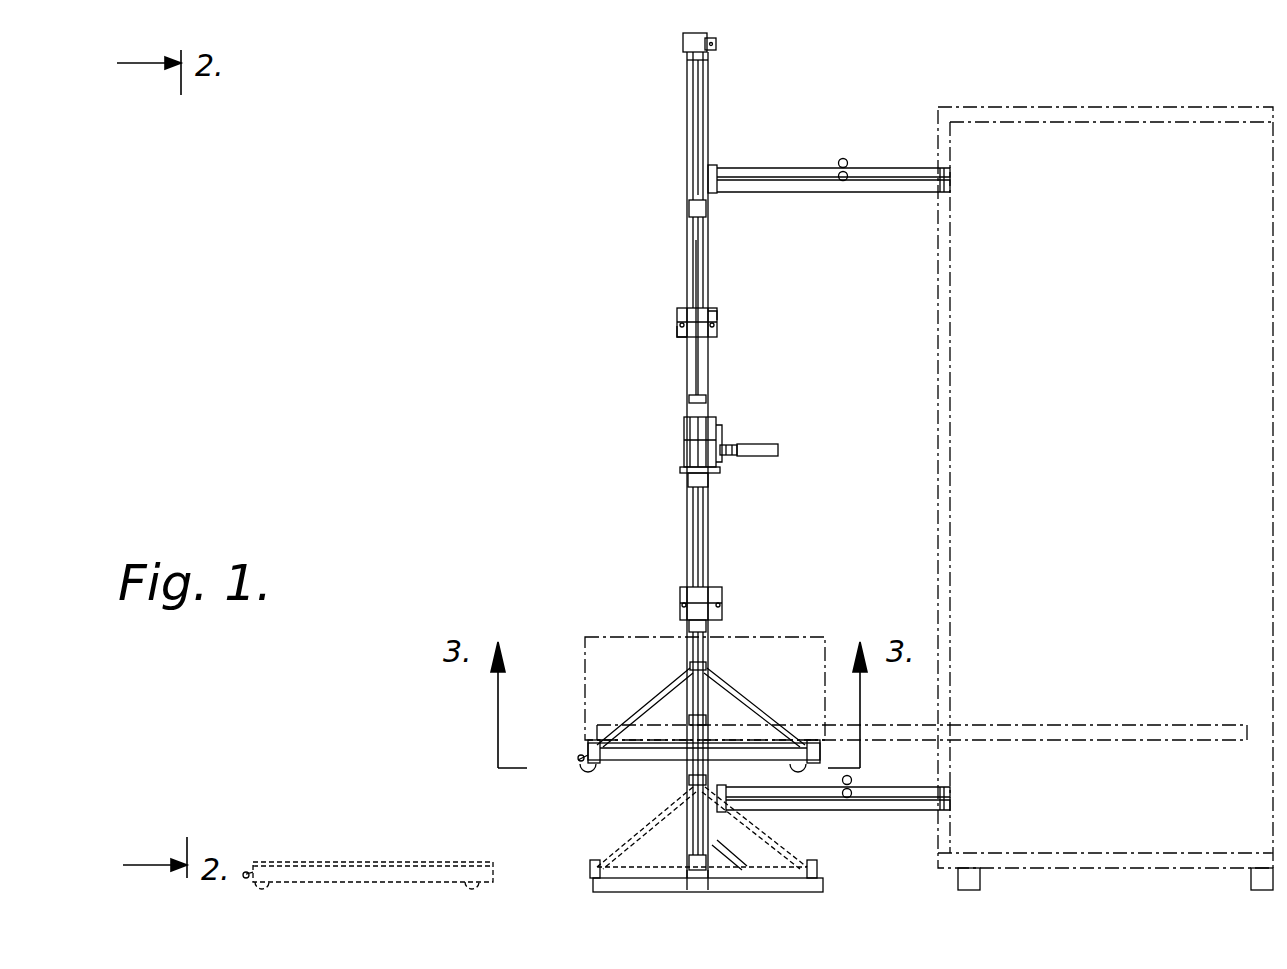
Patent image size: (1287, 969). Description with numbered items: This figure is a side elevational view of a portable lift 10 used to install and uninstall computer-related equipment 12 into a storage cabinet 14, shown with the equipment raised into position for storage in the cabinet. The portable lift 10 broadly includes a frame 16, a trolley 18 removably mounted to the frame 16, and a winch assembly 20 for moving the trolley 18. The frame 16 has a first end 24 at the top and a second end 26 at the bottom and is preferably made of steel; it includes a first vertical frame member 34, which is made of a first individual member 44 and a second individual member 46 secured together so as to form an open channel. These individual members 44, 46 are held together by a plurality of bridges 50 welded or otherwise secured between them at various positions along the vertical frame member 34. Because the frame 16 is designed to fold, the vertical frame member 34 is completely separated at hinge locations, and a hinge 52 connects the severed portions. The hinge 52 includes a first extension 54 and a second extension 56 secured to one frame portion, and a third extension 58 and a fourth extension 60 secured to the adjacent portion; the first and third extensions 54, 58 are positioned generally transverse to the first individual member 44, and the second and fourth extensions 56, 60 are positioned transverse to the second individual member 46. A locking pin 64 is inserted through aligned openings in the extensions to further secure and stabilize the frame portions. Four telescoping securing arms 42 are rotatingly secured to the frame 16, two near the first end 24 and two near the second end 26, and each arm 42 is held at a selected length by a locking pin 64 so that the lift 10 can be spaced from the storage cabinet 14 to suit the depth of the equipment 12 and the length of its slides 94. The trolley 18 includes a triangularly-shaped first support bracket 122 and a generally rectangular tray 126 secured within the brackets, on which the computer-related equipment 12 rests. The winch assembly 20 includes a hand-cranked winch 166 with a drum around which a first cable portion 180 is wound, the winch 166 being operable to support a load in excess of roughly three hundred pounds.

The portable lift 10 is at (655, 120).
The computer-related equipment 12 is at (701, 746).
The storage cabinet 14 is at (1118, 92).
The frame 16 is at (688, 150).
The trolley 18 is at (634, 768).
The winch assembly 20 is at (720, 448).
The first end 24 is at (722, 64).
The second end 26 is at (690, 876).
The first vertical frame member 34 is at (710, 245).
The securing arms 42 is at (765, 175).
The first individual member 44 is at (690, 285).
The second individual member 46 is at (709, 530).
The bridges 50 is at (712, 345).
The hinge 52 is at (723, 314).
The first extension 54 is at (678, 312).
The second extension 56 is at (717, 312).
The third extension 58 is at (678, 330).
The fourth extension 60 is at (718, 330).
The locking pin 64 is at (848, 160).
The slides 94 is at (806, 722).
The first support bracket 122 is at (738, 682).
The tray 126 is at (370, 873).
The winch 166 is at (723, 452).
The first cable portion 180 is at (690, 432).